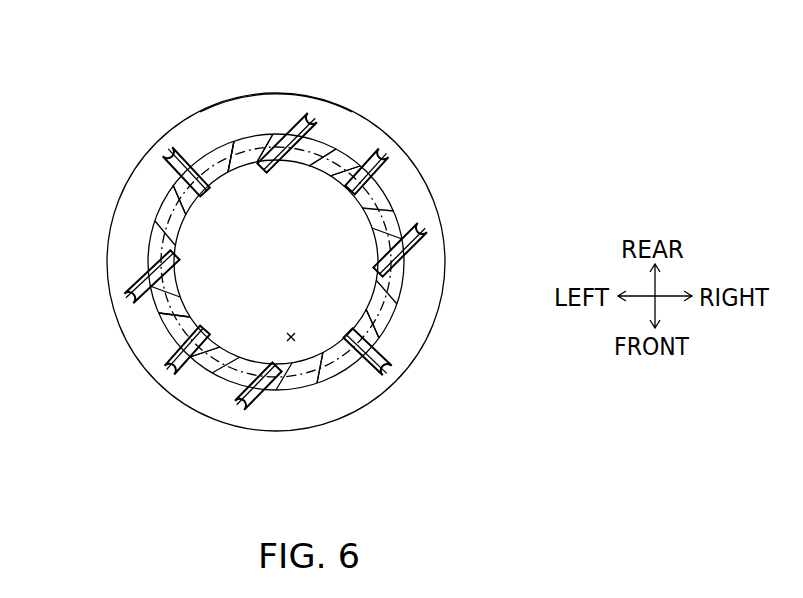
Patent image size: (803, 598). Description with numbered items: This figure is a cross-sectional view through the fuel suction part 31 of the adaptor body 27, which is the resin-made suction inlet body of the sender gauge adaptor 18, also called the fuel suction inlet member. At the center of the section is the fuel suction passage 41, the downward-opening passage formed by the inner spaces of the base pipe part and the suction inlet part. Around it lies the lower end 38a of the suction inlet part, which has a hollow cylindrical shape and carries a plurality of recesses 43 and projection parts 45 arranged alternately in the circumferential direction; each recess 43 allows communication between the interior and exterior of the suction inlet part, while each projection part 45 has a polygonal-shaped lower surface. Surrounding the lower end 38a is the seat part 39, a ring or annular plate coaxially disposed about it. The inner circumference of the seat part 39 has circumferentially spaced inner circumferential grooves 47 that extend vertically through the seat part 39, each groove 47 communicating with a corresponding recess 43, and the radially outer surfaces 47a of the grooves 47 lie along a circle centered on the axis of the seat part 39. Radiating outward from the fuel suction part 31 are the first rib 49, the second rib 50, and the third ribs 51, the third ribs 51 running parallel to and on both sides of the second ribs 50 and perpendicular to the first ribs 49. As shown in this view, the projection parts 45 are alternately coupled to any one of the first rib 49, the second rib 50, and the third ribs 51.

The sender gauge adaptor 18 is at (352, 262).
The adaptor body 27 is at (474, 184).
The fuel suction part 31 is at (288, 82).
The lower end of the suction inlet part 38a is at (403, 293).
The seat part 39 is at (408, 328).
The fuel suction passage 41 is at (291, 340).
The recess 43 is at (215, 177).
The projection part 45 is at (210, 187).
The inner circumferential groove 47 is at (290, 270).
The radially outer surface of the inner circumferential groove 47a is at (200, 166).
The first rib 49 is at (163, 149).
The second rib 50 is at (371, 152).
The third rib 51 is at (314, 112).